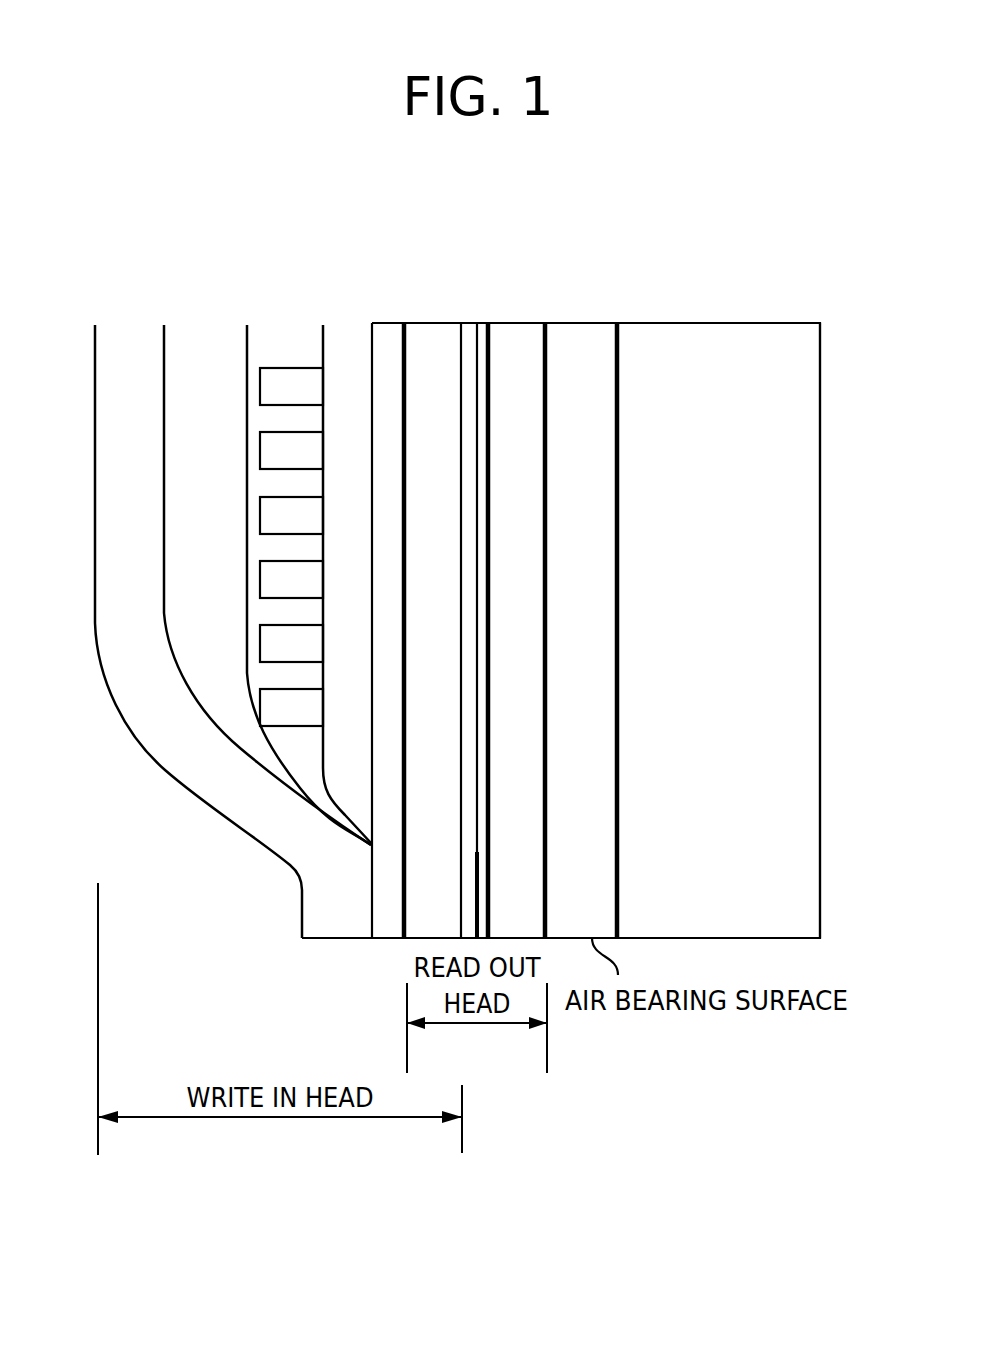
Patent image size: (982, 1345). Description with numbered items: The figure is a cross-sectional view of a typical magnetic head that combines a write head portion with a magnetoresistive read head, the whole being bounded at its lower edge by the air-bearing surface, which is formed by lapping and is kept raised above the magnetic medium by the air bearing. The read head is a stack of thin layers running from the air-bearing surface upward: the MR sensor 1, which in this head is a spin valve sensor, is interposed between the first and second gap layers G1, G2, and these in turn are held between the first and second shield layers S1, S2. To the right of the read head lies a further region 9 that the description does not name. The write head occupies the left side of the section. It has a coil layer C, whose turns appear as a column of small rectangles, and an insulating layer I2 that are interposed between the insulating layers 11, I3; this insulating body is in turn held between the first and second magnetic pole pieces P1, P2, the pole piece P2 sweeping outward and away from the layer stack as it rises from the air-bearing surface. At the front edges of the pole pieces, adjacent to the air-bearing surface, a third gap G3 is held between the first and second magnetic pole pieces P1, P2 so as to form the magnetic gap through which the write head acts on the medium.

The MR sensor 1 is at (479, 888).
The substrate 9 is at (732, 621).
The insulating layer 11 is at (347, 584).
The coil layer C is at (291, 547).
The first gap layer G1 is at (485, 320).
The second gap layer G2 is at (464, 320).
The third gap G3 is at (381, 320).
The insulating layer I2 is at (285, 555).
The insulating layer I3 is at (290, 585).
The first magnetic pole piece P1 is at (427, 630).
The second magnetic pole piece P2 is at (233, 631).
The first shield layer S1 is at (516, 630).
The second shield layer S2 is at (437, 630).